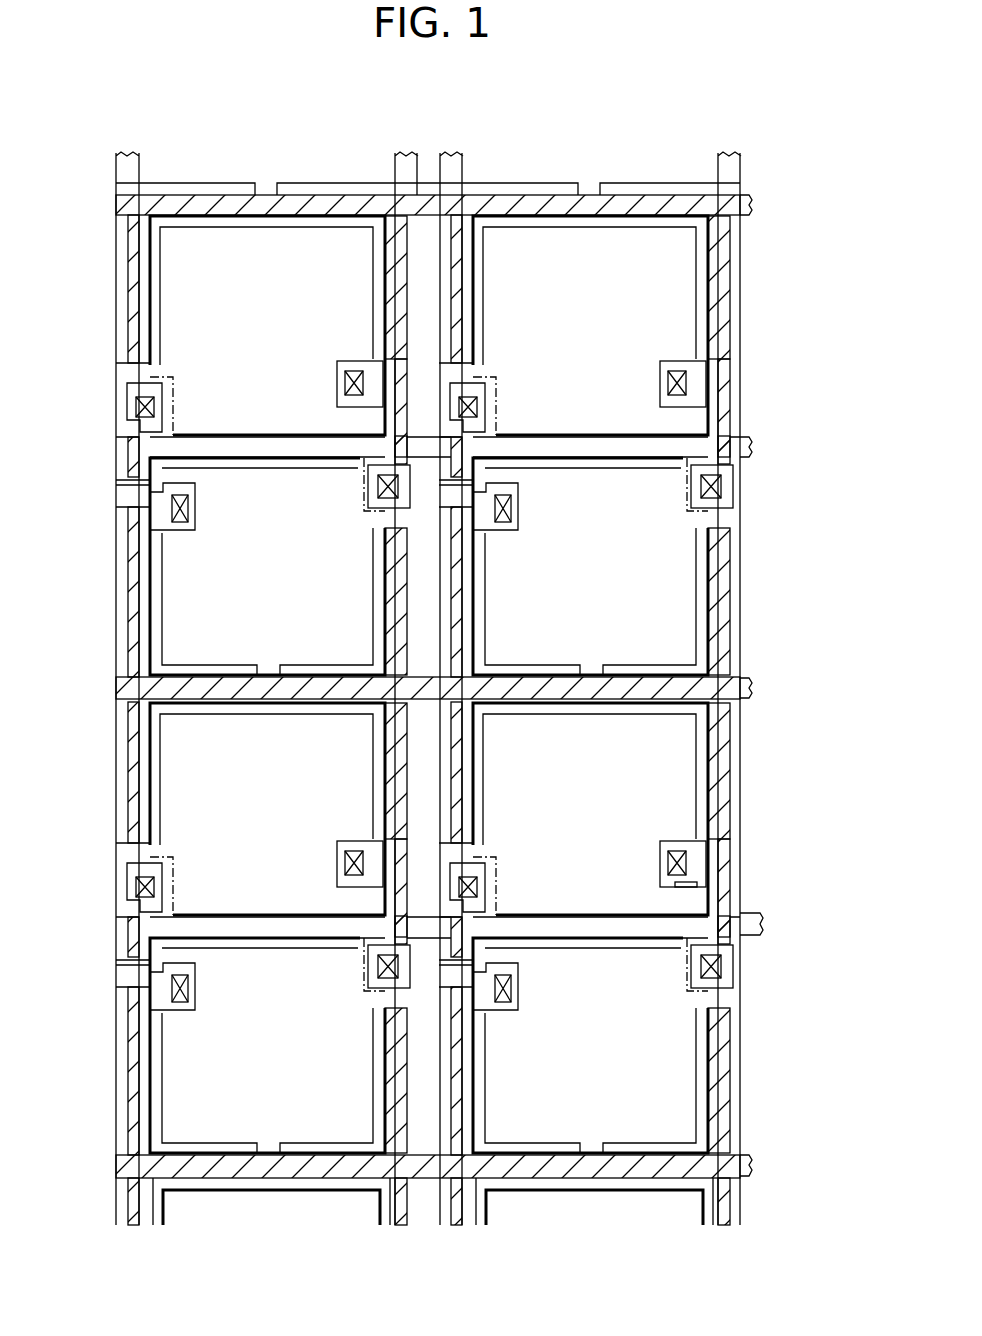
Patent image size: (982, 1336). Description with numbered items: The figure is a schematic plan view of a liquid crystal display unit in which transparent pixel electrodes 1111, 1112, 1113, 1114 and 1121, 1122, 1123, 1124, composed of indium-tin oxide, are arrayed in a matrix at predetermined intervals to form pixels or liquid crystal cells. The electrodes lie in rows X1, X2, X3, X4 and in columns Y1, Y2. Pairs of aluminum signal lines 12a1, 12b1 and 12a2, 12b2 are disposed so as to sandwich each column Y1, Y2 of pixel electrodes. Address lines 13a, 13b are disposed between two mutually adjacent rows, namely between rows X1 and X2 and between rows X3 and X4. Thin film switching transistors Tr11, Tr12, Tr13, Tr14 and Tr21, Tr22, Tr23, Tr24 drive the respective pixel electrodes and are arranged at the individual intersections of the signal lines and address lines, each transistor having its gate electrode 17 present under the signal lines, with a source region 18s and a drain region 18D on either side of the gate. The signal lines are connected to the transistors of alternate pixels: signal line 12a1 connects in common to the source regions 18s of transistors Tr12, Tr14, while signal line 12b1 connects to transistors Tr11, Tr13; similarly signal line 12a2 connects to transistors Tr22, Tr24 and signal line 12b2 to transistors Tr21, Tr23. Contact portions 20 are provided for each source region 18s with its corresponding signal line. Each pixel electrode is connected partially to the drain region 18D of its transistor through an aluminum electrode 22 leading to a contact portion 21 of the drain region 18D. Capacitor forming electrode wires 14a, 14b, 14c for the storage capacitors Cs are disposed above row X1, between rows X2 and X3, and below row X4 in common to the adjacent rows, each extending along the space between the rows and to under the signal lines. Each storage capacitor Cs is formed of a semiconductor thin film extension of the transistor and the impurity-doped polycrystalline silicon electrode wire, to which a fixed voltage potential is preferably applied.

The signal line 12a1 is at (140, 163).
The signal line 12b1 is at (397, 163).
The signal line 12a2 is at (458, 163).
The signal line 12b2 is at (722, 163).
The electrode wire 14a is at (752, 204).
The electrode wire 14b is at (752, 688).
The electrode wire 14c is at (752, 1165).
The address line 13a is at (752, 447).
The address line 13b is at (755, 936).
The gate electrode 17 is at (744, 903).
The pixel electrode 1111 is at (175, 268).
The pixel electrode 1121 is at (683, 287).
The pixel electrode 1112 is at (175, 614).
The pixel electrode 1122 is at (683, 604).
The pixel electrode 1113 is at (175, 743).
The pixel electrode 1123 is at (683, 739).
The pixel electrode 1114 is at (175, 1114).
The pixel electrode 1124 is at (683, 1099).
The storage capacitor Cs is at (387, 265).
The drain region 18D is at (338, 396).
The source region 18s is at (163, 392).
The switching transistor Tr11 is at (367, 363).
The switching transistor Tr21 is at (678, 363).
The switching transistor Tr12 is at (195, 518).
The switching transistor Tr22 is at (518, 518).
The switching transistor Tr13 is at (365, 845).
The switching transistor Tr23 is at (685, 845).
The switching transistor Tr14 is at (195, 1009).
The switching transistor Tr24 is at (518, 1009).
The contact portion 20 is at (702, 484).
The contact portion 21 is at (665, 860).
The aluminum electrode 22 is at (675, 887).
The row X1 is at (110, 311).
The row X2 is at (110, 553).
The row X3 is at (110, 796).
The row X4 is at (110, 1034).
The column Y1 is at (268, 160).
The column Y2 is at (591, 160).